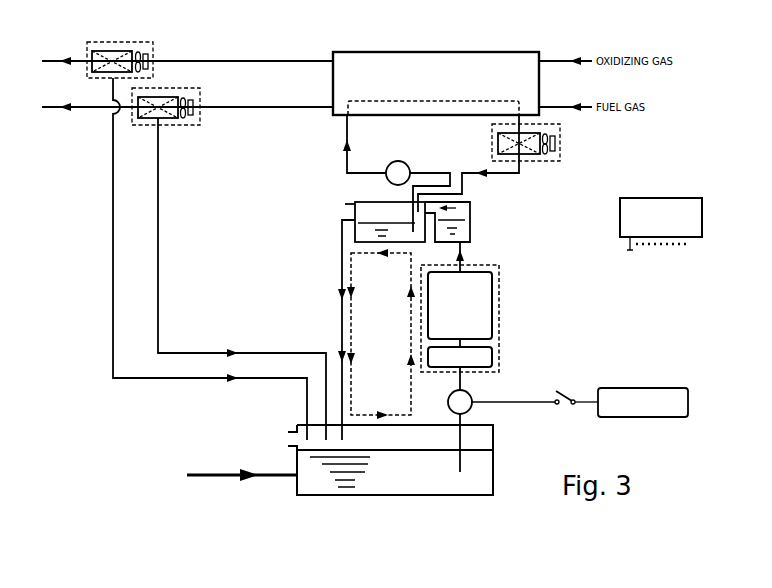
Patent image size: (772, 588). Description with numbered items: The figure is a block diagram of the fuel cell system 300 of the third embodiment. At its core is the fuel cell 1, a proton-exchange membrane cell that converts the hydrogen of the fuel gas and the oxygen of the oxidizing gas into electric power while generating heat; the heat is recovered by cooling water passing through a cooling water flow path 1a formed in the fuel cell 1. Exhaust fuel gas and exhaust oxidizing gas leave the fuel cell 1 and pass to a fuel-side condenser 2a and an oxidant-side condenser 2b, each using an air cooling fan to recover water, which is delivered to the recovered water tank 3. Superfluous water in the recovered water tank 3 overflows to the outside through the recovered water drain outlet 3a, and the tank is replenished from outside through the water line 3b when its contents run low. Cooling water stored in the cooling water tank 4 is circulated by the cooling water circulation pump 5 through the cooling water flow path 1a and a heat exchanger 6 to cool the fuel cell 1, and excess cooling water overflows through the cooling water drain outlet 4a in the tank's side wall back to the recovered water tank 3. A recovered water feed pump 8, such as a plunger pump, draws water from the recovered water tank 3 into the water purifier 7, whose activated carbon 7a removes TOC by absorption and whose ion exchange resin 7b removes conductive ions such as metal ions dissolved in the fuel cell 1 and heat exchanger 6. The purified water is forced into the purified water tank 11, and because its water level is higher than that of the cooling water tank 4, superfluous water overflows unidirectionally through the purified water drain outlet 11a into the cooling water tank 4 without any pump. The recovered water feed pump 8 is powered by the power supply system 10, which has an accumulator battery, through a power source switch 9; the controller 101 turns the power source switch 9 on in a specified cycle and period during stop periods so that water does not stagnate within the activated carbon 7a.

The fuel cell 1 is at (436, 118).
The cooling water flow path 1a is at (473, 118).
The fuel-side condenser 2a is at (188, 95).
The oxidant-side condenser 2b is at (142, 49).
The recovered water tank 3 is at (496, 441).
The recovered water drain outlet 3a is at (287, 432).
The water line 3b is at (258, 477).
The cooling water tank 4 is at (375, 201).
The cooling water drain outlet 4a is at (334, 207).
The cooling water circulation pump 5 is at (399, 160).
The heat exchanger 6 is at (564, 151).
The water purifier 7 is at (486, 265).
The activated carbon 7a is at (492, 355).
The ion exchange resin 7b is at (492, 302).
The recovered water feed pump 8 is at (472, 394).
The power source switch 9 is at (575, 382).
The power supply system 10 is at (690, 392).
The purified water tank 11 is at (472, 198).
The purified water drain outlet 11a is at (470, 210).
The controller 101 is at (705, 201).
The fuel cell system 300 is at (702, 66).